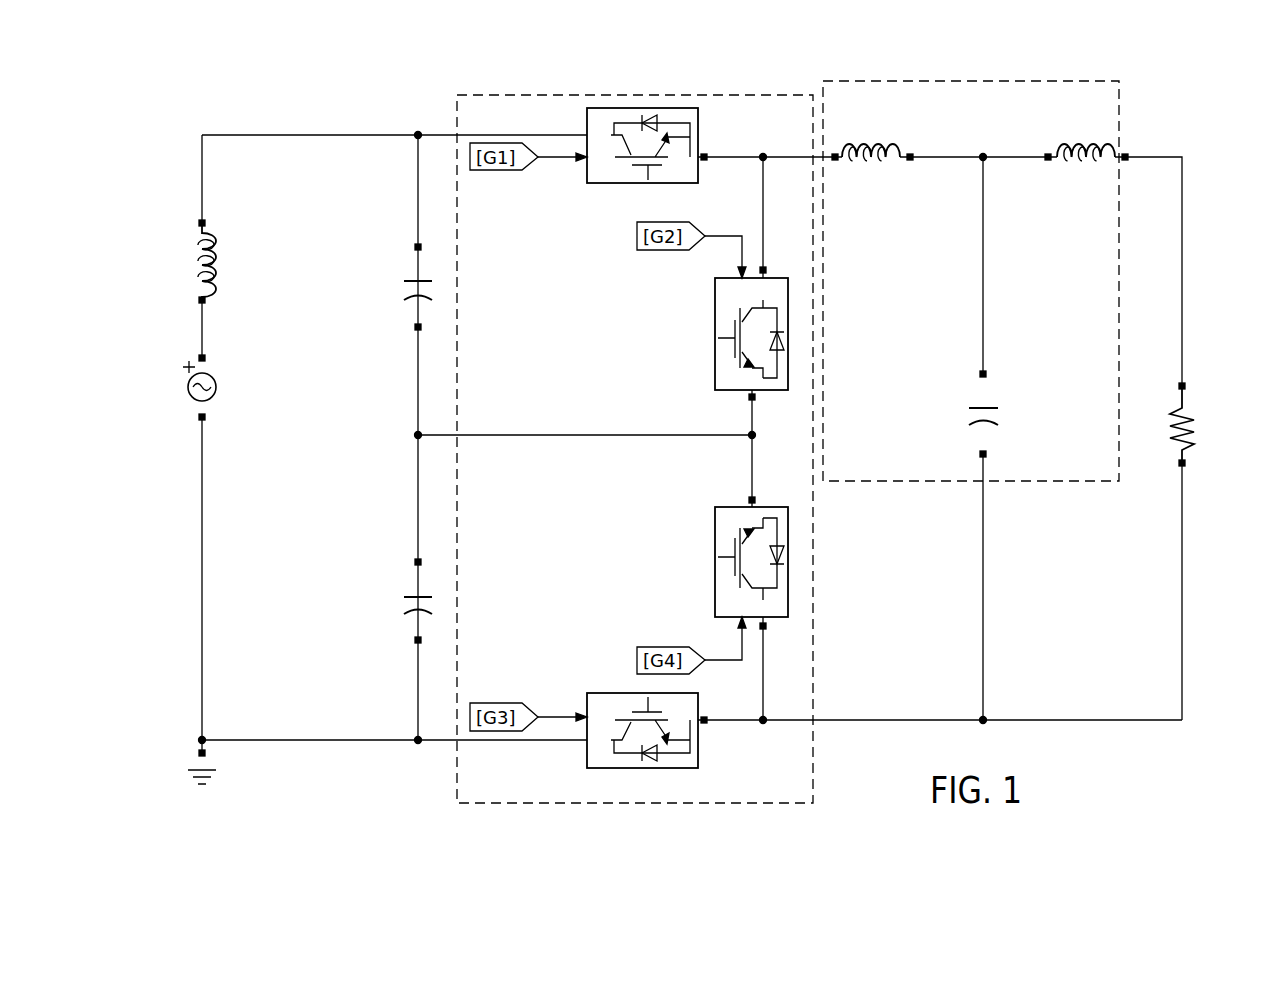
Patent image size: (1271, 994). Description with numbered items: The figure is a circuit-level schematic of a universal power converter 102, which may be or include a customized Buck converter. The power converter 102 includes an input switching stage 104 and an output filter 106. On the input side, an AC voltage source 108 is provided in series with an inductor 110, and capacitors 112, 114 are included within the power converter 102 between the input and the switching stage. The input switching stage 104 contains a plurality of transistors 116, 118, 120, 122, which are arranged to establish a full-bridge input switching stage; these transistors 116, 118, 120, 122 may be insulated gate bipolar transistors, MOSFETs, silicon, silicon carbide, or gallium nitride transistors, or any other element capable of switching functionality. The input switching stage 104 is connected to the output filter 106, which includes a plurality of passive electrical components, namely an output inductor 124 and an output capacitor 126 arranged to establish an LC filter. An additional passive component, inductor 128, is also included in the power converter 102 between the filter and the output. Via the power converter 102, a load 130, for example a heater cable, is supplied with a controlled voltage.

The power converter 102 is at (220, 88).
The input switching stage 104 is at (556, 78).
The output filter 106 is at (898, 66).
The AC voltage source 108 is at (188, 388).
The inductor 110 is at (196, 232).
The capacitor 112 is at (414, 280).
The capacitor 114 is at (414, 596).
The transistor 116 is at (587, 172).
The transistor 118 is at (730, 392).
The transistor 120 is at (715, 537).
The transistor 122 is at (622, 692).
The output inductor 124 is at (886, 170).
The output capacitor 126 is at (992, 407).
The inductor 128 is at (1068, 172).
The load 130 is at (1190, 408).